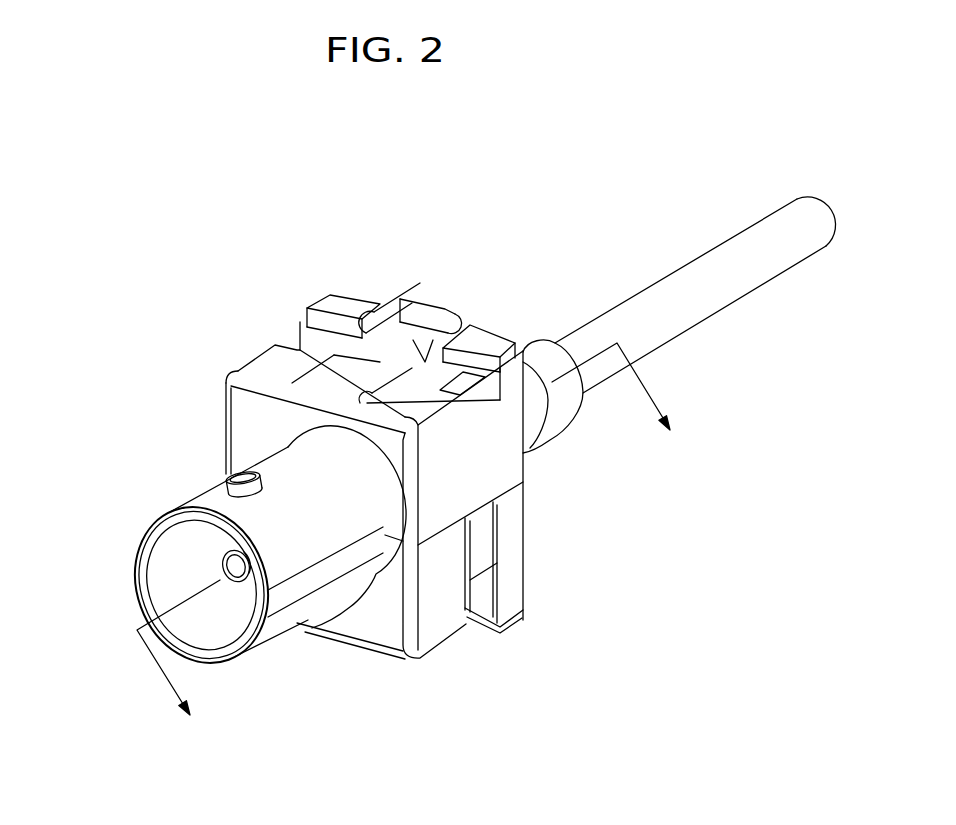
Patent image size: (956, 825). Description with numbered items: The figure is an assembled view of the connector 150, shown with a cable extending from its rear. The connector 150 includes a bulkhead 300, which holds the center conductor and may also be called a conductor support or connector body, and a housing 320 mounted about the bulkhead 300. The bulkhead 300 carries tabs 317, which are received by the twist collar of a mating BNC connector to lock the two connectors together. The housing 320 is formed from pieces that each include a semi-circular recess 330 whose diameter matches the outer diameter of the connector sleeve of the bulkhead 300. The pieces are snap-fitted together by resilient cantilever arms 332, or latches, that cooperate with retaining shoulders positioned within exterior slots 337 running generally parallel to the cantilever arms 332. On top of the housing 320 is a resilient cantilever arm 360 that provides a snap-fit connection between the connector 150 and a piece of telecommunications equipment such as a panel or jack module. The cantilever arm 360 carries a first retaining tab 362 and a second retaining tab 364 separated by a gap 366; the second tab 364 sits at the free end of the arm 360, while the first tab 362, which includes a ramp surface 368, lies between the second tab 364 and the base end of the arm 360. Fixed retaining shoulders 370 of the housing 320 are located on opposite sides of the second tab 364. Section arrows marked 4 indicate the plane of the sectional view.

The connector 150 is at (124, 360).
The bulkhead 300 is at (149, 509).
The tabs 317 is at (232, 475).
The housing 320 is at (236, 352).
The semi-circular recess 330 is at (293, 442).
The resilient cantilever arms 332 is at (478, 547).
The exterior slots 337 is at (480, 597).
The resilient cantilever arms 360 is at (347, 382).
The first retaining tab 362 is at (405, 350).
The second retaining tab 364 is at (428, 320).
The gap 366 is at (418, 365).
The ramp surface 368 is at (368, 355).
The fixed retaining shoulders 370 is at (340, 293).
The section line 4- 4 is at (411, 545).